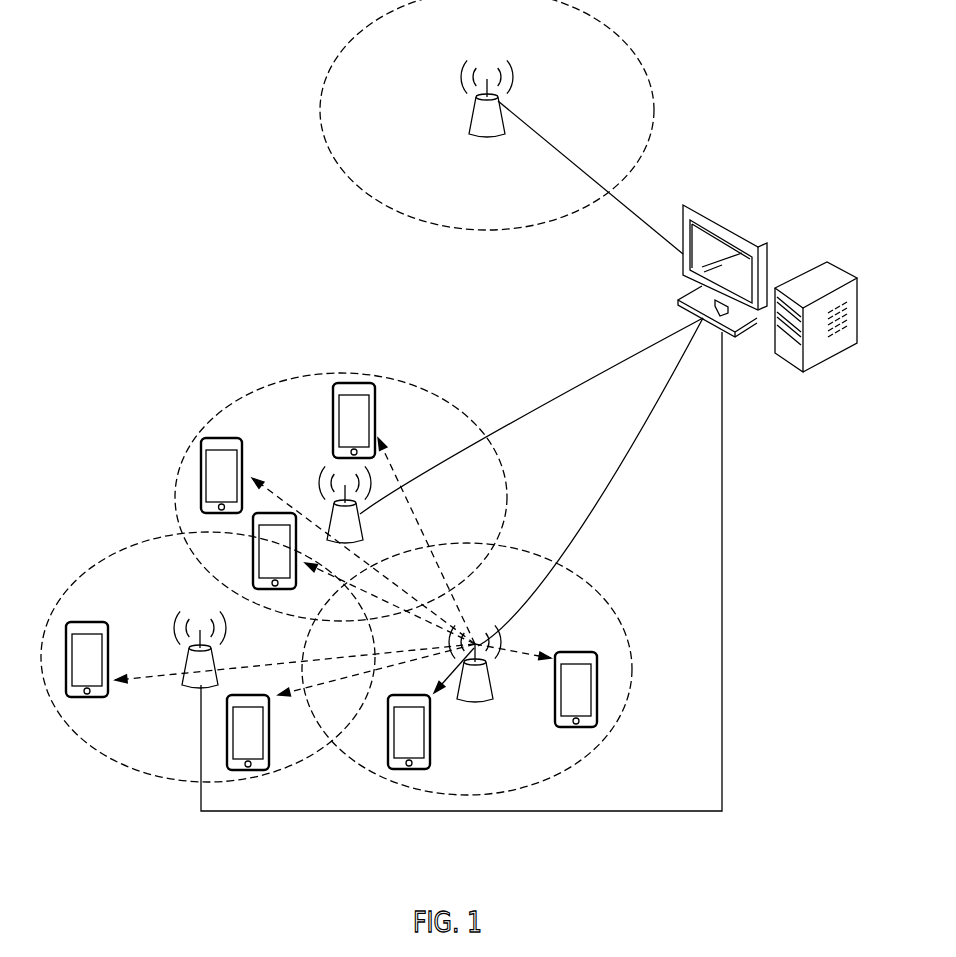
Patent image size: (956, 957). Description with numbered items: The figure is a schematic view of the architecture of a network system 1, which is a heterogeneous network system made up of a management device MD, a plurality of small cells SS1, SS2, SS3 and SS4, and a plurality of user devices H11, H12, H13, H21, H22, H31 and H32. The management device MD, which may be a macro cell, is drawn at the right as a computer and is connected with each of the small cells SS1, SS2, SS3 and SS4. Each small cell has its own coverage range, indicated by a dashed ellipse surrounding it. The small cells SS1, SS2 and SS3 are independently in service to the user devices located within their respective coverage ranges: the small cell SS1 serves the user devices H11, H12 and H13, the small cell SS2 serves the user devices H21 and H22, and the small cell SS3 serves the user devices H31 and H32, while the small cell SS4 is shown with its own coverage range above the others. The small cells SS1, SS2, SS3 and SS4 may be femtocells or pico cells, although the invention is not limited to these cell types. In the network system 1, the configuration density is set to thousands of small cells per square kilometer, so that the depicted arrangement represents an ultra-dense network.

The network system 1 is at (140, 186).
The small cell SS1 is at (362, 512).
The small cell SS2 is at (477, 700).
The small cell SS3 is at (190, 685).
The small cell SS4 is at (485, 134).
The user device H11 is at (222, 437).
The user device H12 is at (255, 586).
The user device H13 is at (353, 382).
The user device H21 is at (401, 770).
The user device H22 is at (576, 728).
The user device H31 is at (87, 698).
The user device H32 is at (248, 771).
The management device MD is at (803, 283).